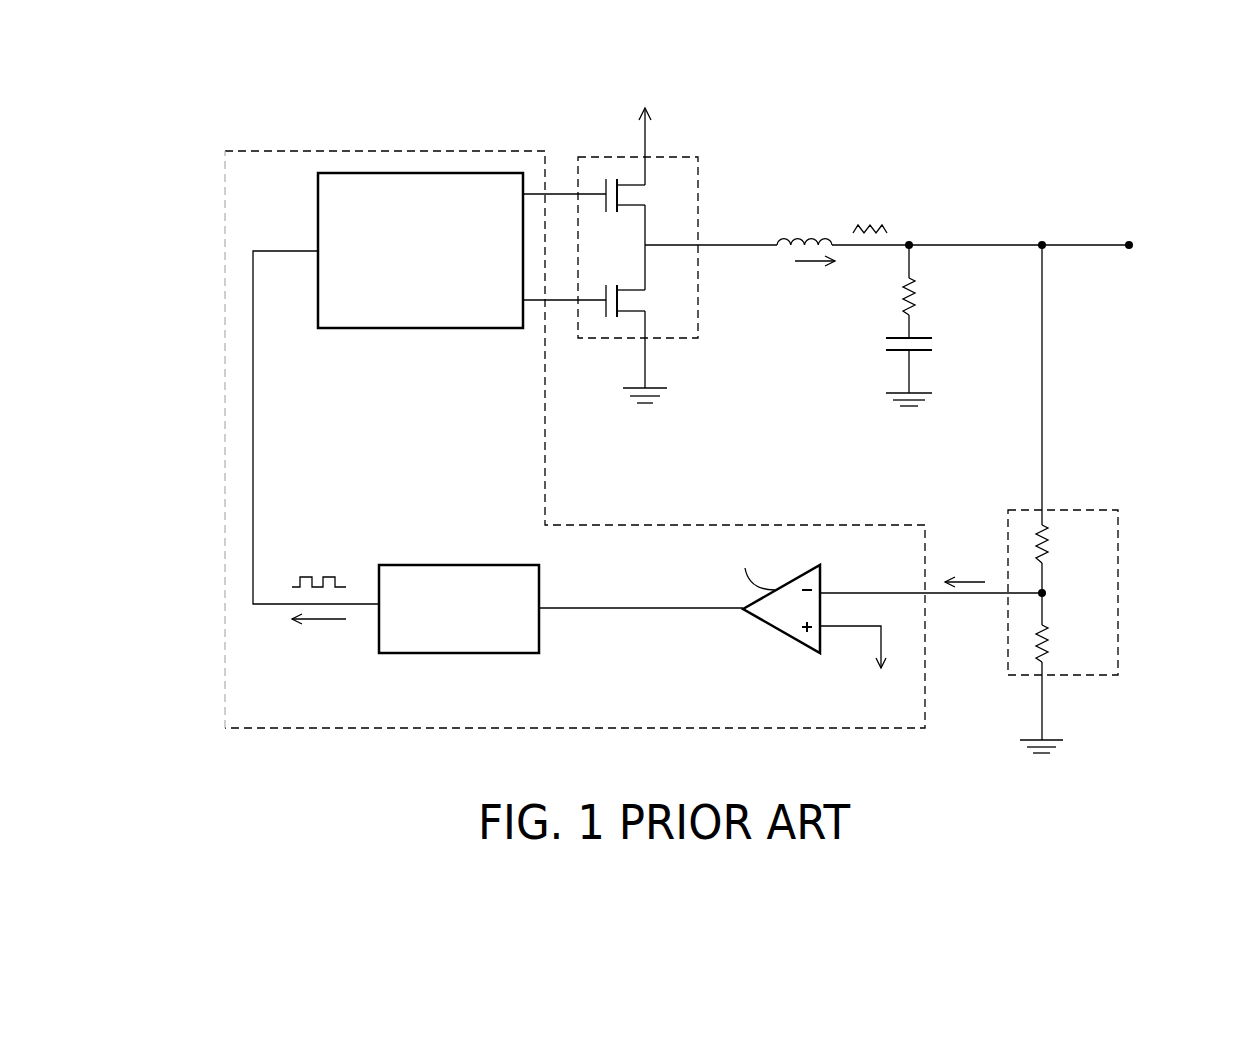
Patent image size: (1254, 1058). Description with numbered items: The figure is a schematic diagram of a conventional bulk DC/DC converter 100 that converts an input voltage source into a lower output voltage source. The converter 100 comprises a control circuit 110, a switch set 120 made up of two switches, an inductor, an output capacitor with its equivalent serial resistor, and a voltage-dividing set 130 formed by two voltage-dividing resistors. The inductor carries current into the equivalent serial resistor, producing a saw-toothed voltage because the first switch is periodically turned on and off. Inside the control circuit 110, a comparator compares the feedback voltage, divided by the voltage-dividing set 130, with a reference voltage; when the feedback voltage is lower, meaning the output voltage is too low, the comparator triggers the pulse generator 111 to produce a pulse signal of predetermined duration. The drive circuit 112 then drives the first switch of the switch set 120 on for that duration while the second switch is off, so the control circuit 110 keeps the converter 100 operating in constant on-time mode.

The bulk DC/DC converter 100 is at (1114, 112).
The control circuit 110 is at (343, 151).
The pulse generator 111 is at (457, 565).
The drive circuit 112 is at (425, 173).
The switch set 120 is at (678, 157).
The voltage-dividing set 130 is at (1095, 510).